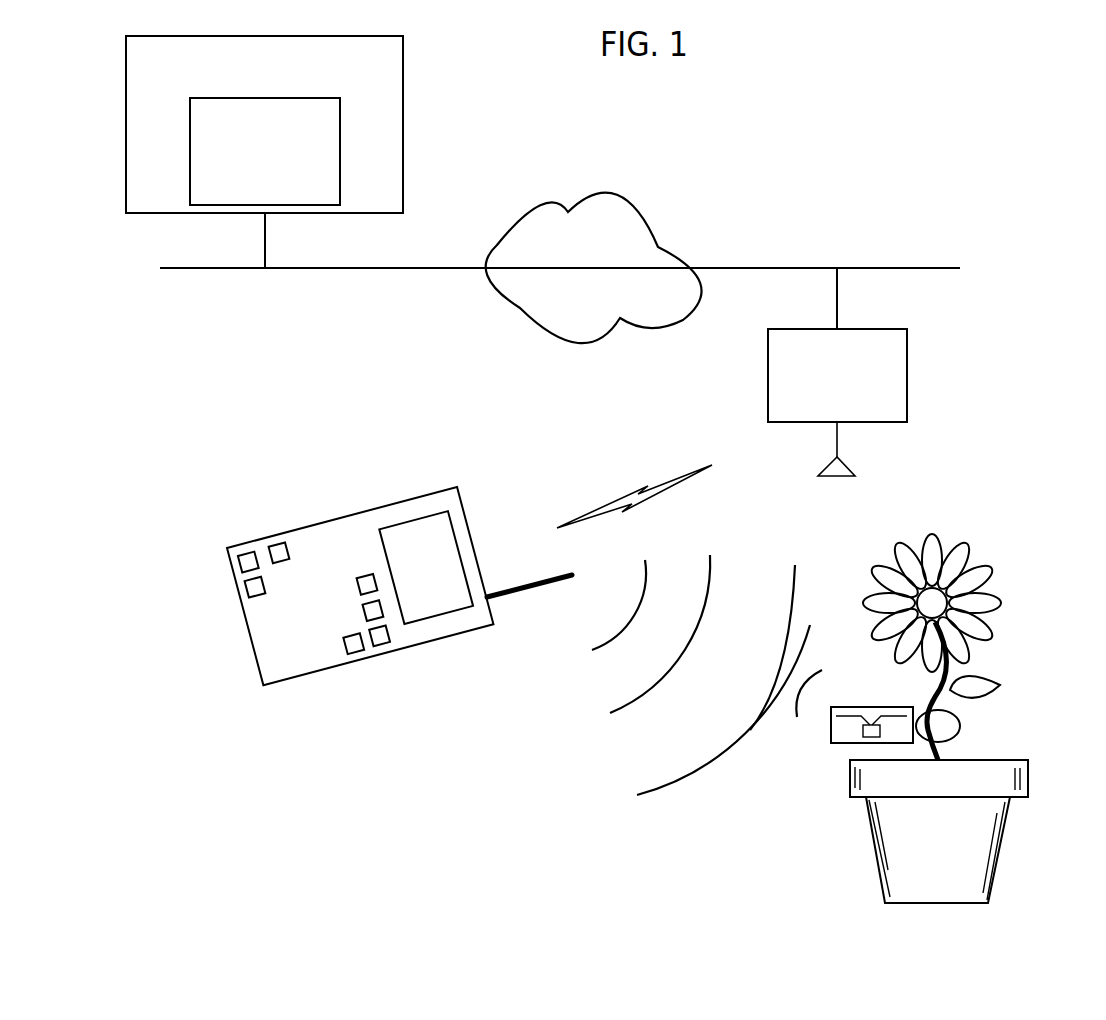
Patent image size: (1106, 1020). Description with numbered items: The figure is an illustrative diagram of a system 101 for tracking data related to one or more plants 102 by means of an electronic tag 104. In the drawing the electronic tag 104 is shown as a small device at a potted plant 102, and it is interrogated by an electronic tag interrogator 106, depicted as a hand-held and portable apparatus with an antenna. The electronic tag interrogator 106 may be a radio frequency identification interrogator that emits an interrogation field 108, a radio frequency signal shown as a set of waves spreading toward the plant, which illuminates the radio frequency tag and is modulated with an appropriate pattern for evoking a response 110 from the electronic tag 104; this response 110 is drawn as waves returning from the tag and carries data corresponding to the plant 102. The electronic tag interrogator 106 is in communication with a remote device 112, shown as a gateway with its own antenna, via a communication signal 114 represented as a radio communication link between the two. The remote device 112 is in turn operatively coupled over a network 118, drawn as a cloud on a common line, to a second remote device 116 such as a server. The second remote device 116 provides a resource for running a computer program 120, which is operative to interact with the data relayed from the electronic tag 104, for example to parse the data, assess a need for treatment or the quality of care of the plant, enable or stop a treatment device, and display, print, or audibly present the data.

The system 101 is at (963, 185).
The plant 102 is at (983, 637).
The electronic tag 104 is at (828, 728).
The electronic tag interrogator 106 is at (290, 678).
The interrogation field 108 is at (543, 643).
The response 110 is at (817, 643).
The remote device 112 is at (897, 422).
The communication signal 114 is at (592, 512).
The second remote device 116 is at (267, 152).
The network 118 is at (515, 308).
The computer program 120 is at (187, 173).